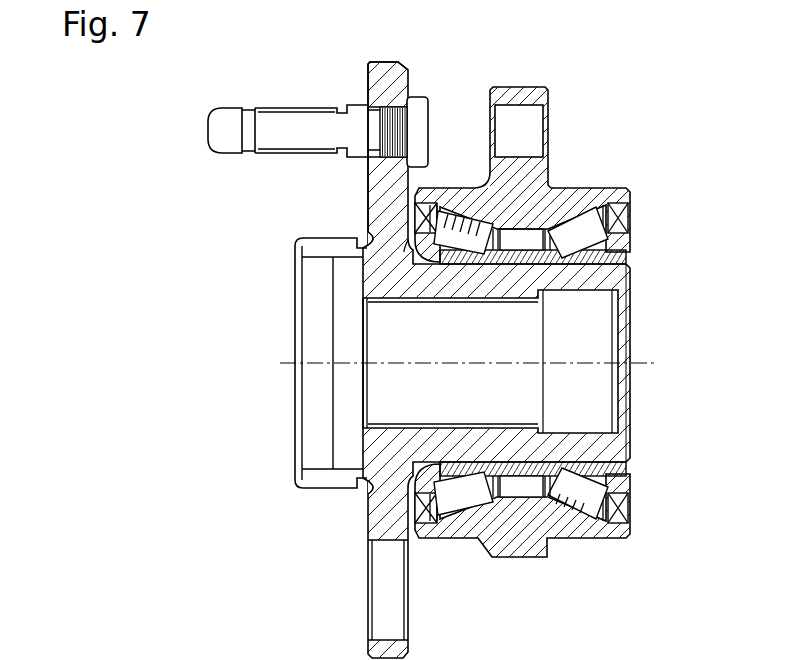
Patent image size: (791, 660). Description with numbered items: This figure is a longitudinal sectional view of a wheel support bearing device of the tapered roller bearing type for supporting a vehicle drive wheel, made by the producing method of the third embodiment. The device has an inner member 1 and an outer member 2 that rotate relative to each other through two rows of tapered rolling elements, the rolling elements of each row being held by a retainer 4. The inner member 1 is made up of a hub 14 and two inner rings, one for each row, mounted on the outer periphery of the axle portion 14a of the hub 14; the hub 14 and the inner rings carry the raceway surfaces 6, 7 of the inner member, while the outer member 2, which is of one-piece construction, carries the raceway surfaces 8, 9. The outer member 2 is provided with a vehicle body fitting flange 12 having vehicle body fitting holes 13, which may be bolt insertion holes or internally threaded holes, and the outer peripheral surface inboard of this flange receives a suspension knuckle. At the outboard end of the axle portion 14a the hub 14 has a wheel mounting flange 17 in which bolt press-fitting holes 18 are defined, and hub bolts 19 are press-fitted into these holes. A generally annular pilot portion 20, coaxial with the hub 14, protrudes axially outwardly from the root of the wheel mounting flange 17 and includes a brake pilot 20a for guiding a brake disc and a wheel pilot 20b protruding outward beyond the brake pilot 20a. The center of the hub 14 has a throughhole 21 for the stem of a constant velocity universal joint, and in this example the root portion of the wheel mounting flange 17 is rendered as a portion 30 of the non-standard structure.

The inner member 1 is at (207, 318).
The outer member 2 is at (581, 185).
The retainer 4 is at (560, 497).
The raceway surface 6 is at (413, 498).
The raceway surface 7 is at (620, 493).
The raceway surface 8 is at (473, 497).
The raceway surface 9 is at (573, 507).
The vehicle body fitting flange 12 is at (513, 92).
The vehicle body fitting holes 13 is at (545, 120).
The hub 14 is at (403, 288).
The axle portion 14a is at (567, 287).
The wheel mounting flange 17 is at (380, 83).
The bolt press-fitting holes 18 is at (400, 118).
The hub bolts 19 is at (284, 132).
The pilot portion 20 is at (209, 200).
The brake pilot 20a is at (365, 236).
The wheel pilot 20b is at (353, 248).
The throughhole 21 is at (513, 425).
The portion of the non-standard structure 30 is at (365, 222).